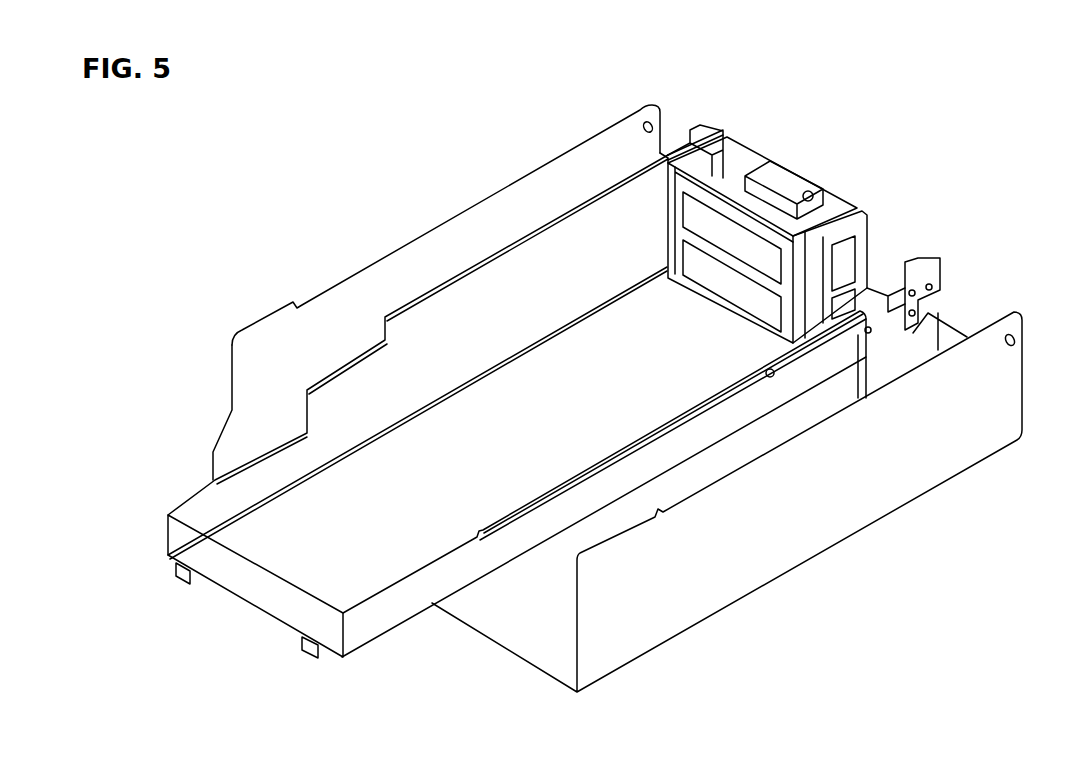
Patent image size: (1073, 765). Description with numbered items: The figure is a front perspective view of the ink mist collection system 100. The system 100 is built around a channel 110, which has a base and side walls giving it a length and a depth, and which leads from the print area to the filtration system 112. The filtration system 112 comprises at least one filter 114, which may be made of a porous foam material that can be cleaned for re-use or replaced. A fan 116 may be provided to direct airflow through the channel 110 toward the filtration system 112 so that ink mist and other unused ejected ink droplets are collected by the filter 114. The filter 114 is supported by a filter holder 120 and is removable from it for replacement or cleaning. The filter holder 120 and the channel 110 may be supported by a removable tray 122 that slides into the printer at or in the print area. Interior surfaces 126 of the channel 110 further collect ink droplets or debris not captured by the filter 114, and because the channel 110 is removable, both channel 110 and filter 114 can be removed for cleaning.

The ink mist collection system 100 is at (647, 153).
The channel 110 is at (605, 338).
The filtration system 112 is at (875, 208).
The filter 114 is at (723, 132).
The fan 116 is at (797, 168).
The filter holder 120 is at (713, 157).
The removable tray 122 is at (272, 618).
The interior surfaces 126 is at (355, 497).